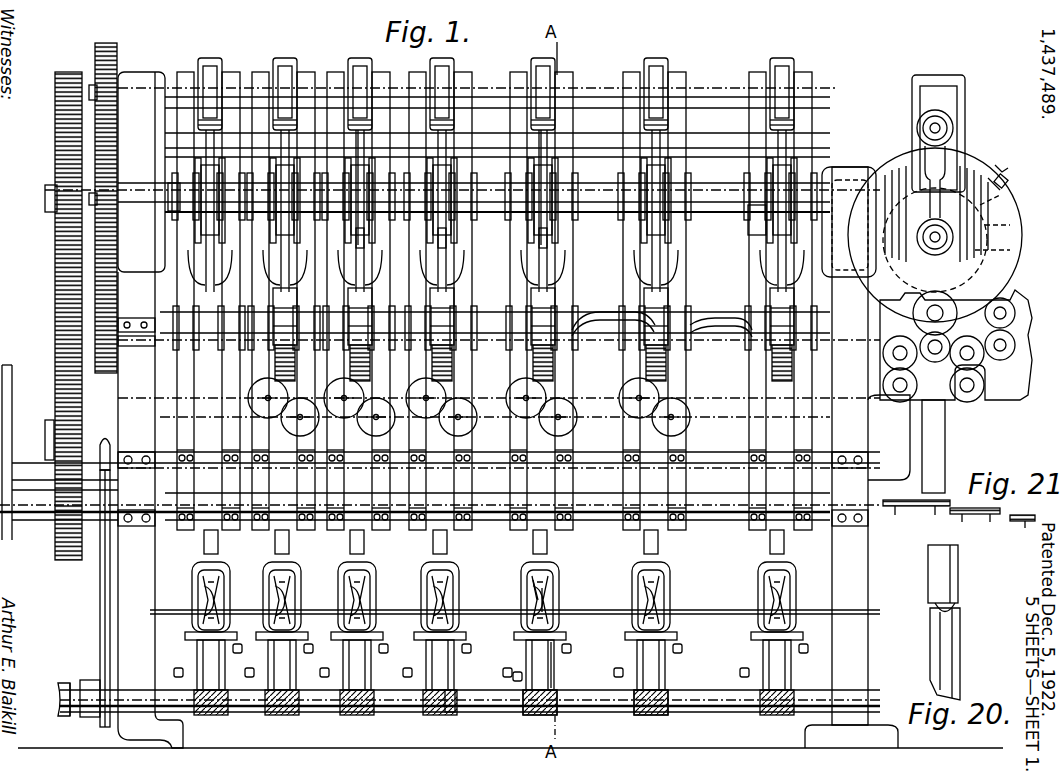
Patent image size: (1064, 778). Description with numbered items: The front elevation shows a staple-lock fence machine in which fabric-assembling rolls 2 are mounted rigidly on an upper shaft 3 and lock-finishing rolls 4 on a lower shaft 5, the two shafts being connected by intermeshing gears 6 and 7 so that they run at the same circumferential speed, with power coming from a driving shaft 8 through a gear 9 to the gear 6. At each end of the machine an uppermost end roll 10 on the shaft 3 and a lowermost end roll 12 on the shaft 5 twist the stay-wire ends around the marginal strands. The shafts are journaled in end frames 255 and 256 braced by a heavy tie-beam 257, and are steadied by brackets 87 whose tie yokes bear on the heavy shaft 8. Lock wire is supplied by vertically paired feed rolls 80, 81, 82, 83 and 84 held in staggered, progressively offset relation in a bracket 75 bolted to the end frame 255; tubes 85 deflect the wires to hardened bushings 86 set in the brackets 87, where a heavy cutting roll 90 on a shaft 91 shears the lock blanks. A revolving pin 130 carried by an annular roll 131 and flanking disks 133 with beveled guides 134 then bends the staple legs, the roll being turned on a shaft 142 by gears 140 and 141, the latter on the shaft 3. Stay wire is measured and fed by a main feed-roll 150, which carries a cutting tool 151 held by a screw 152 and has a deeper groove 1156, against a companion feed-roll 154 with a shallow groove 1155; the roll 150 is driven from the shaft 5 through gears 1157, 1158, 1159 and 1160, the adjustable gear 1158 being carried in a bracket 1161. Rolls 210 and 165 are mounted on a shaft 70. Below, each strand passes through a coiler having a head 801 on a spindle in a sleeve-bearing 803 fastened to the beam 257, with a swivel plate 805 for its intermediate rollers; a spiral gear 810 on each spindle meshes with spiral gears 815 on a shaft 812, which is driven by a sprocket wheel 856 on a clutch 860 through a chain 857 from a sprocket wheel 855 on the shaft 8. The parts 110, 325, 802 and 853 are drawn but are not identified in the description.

In FIG. 1, the fabric-assembling rolls 2 is at (365, 148).
In FIG. 1, the shaft 3 is at (45, 193).
In FIG. 1, the lock-finishing rolls 4 is at (280, 378).
In FIG. 1, the shaft 5 is at (50, 425).
In FIG. 1, the gear 6 is at (70, 341).
In FIG. 1, the gear 7 is at (63, 265).
In FIG. 1, the driving shaft 8 is at (18, 492).
In FIG. 1, the gear 9 is at (63, 476).
In FIG. 1, the end roll 10 is at (208, 250).
In FIG. 1, the end roll 12 is at (208, 400).
In FIG. 1, the shaft 70 is at (595, 100).
In FIG. 1, the bracket 75 is at (1012, 330).
In FIG. 1, the feed-roll pair 80 is at (893, 343).
In FIG. 21, the feed-roll pair 80 is at (936, 521).
In FIG. 1, the feed-roll pair 81 is at (893, 378).
In FIG. 21, the feed-roll pair 81 is at (899, 521).
In FIG. 1, the feed-roll pair 82 is at (960, 395).
In FIG. 21, the feed-roll pair 82 is at (966, 529).
In FIG. 1, the feed-roll pair 83 is at (1008, 302).
In FIG. 21, the feed-roll pair 83 is at (996, 529).
In FIG. 1, the feed-roll pair 84 is at (1005, 360).
In FIG. 21, the feed-roll pair 84 is at (1028, 536).
In FIG. 1, the tubes 85 is at (725, 325).
In FIG. 1, the hardened bushings 86 is at (596, 318).
In FIG. 1, the brackets 87 is at (425, 130).
In FIG. 1, the cutting roll 90 is at (275, 310).
In FIG. 1, the cutting-roll shaft 91 is at (166, 330).
In FIG. 1, the yoke 110 is at (372, 258).
In FIG. 1, the revolving pin 130 is at (357, 165).
In FIG. 1, the roll 131 is at (448, 230).
In FIG. 1, the disks 133 is at (374, 170).
In FIG. 1, the beveled annular guides 134 is at (366, 232).
In FIG. 1, the gear 140 is at (100, 182).
In FIG. 1, the gear 141 is at (110, 145).
In FIG. 1, the shaft 142 is at (175, 206).
In FIG. 1, the measuring feed-roll 150 is at (975, 232).
In FIG. 20, the measuring feed-roll 150 is at (960, 650).
In FIG. 1, the cutting tool 151 is at (1003, 175).
In FIG. 1, the screw 152 is at (1006, 181).
In FIG. 1, the companion feed-roll 154 is at (955, 140).
In FIG. 20, the companion feed-roll 154 is at (958, 578).
In FIG. 1, the roll 165 is at (292, 68).
In FIG. 1, the roll 210 is at (214, 60).
In FIG. 1, the end frame 255 is at (862, 535).
In FIG. 1, the end frame 256 is at (133, 570).
In FIG. 1, the tie-beam 257 is at (501, 661).
In FIG. 1, the cross bar 325 is at (499, 450).
In FIG. 1, the head 801 is at (372, 580).
In FIG. 1, the spring 802 is at (545, 600).
In FIG. 1, the sleeve-bearing 803 is at (556, 666).
In FIG. 1, the swivel plate 805 is at (532, 594).
In FIG. 1, the spiral gear 810 is at (452, 692).
In FIG. 1, the shaft 812 is at (718, 695).
In FIG. 1, the spiral gears 815 is at (658, 712).
In FIG. 1, the hub 853 is at (548, 708).
In FIG. 1, the sprocket wheel 855 is at (108, 456).
In FIG. 1, the sprocket wheel 856 is at (110, 685).
In FIG. 1, the chain 857 is at (103, 594).
In FIG. 1, the clutch 860 is at (70, 688).
In FIG. 20, the shallow circumferential groove 1155 is at (945, 560).
In FIG. 20, the deeper groove 1156 is at (947, 628).
In FIG. 1, the gear 1157 is at (942, 455).
In FIG. 1, the adjustable gear 1158 is at (945, 398).
In FIG. 1, the gear 1159 is at (1012, 226).
In FIG. 1, the gear 1160 is at (1021, 201).
In FIG. 1, the bracket 1161 is at (1012, 251).